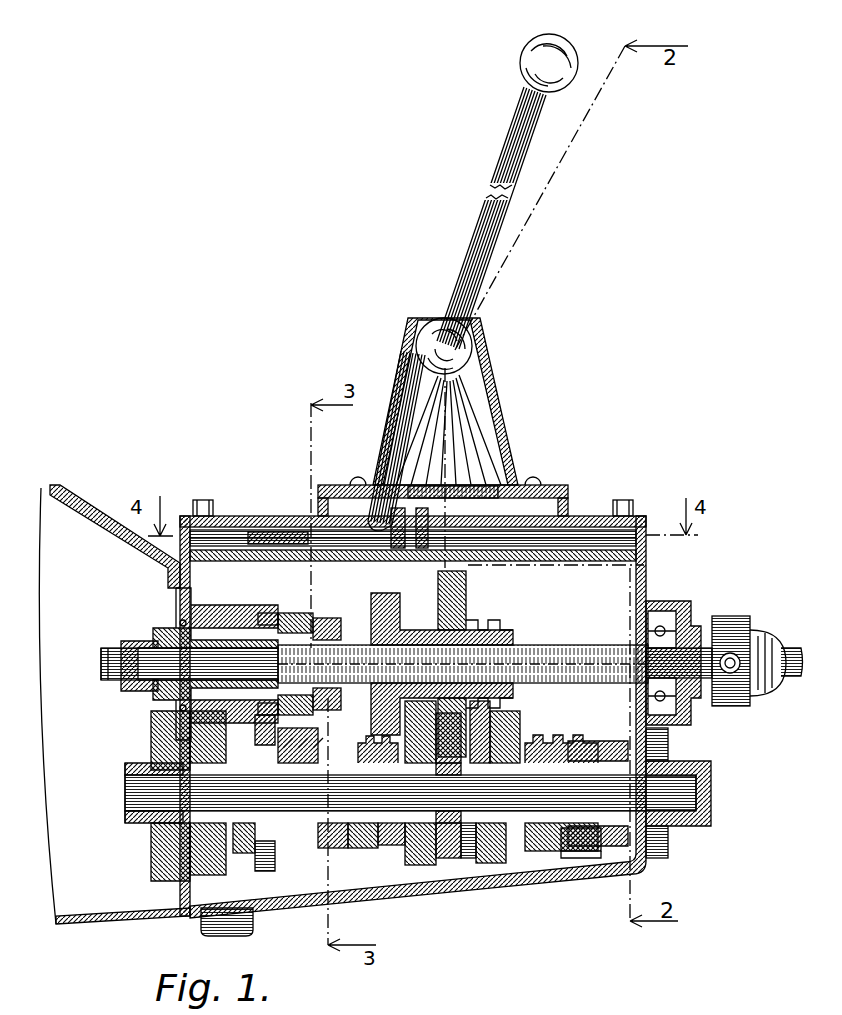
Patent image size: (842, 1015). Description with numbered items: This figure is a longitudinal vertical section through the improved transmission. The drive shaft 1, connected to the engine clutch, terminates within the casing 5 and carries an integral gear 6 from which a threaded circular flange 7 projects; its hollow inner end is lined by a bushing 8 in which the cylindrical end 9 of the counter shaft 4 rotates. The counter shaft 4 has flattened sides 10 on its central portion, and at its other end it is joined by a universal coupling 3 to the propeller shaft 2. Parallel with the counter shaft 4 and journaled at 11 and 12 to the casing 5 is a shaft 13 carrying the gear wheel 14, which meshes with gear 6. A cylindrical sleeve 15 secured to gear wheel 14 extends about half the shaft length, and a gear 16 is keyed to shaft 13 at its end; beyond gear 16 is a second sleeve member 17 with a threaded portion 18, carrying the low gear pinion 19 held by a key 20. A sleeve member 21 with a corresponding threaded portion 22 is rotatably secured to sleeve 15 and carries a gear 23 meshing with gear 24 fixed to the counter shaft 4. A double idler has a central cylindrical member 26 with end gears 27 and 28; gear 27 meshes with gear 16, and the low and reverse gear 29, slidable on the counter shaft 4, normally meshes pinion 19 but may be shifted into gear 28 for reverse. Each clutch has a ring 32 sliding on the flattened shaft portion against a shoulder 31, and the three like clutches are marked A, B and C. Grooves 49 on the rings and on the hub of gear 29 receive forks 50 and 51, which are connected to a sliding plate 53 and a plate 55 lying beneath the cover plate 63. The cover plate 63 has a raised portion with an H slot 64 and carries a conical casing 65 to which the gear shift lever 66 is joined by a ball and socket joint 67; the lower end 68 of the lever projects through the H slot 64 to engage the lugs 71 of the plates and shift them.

The drive shaft 1 is at (125, 655).
The propeller shaft 2 is at (782, 667).
The universal coupling 3 is at (721, 607).
The counter shaft 4 is at (665, 652).
The casing 5 is at (300, 902).
The gear 6 is at (200, 620).
The threaded circular flange 7 is at (278, 605).
The bushing 8 is at (135, 632).
The cylindrical end 9 is at (160, 662).
The flattened sides 10 is at (515, 650).
The journal 11 is at (665, 775).
The journal 12 is at (130, 790).
The shaft 13 is at (480, 815).
The gear wheel 14 is at (198, 840).
The cylindrical sleeve 15 is at (320, 840).
The gear 16 is at (412, 838).
The second sleeve member 17 is at (455, 815).
The threaded portion 18 is at (510, 815).
The gear 19 is at (465, 818).
The key 20 is at (432, 760).
The sleeve member 21 is at (355, 838).
The threaded portion 22 is at (355, 745).
The gear 23 is at (378, 838).
The gear 24 is at (365, 595).
The central cylindrical member 26 is at (490, 715).
The gear 27 is at (405, 715).
The gear 28 is at (515, 722).
The low and reverse gear 29 is at (460, 595).
The shoulder 31 is at (520, 805).
The ring 32 is at (590, 835).
The grooves 49 is at (470, 615).
The fork 50 is at (250, 600).
The fork 51 is at (275, 736).
The sliding plate 53 is at (280, 530).
The plate 55 is at (262, 522).
The cover plate 63 is at (560, 481).
The H slot 64 is at (471, 478).
The conical casing 65 is at (484, 397).
The gear shift lever 66 is at (466, 270).
The ball and socket joint 67 is at (448, 341).
The lower end 68 is at (390, 447).
The lugs 71 is at (425, 540).
The clutch A is at (292, 610).
The clutch B is at (250, 855).
The clutch C is at (580, 850).